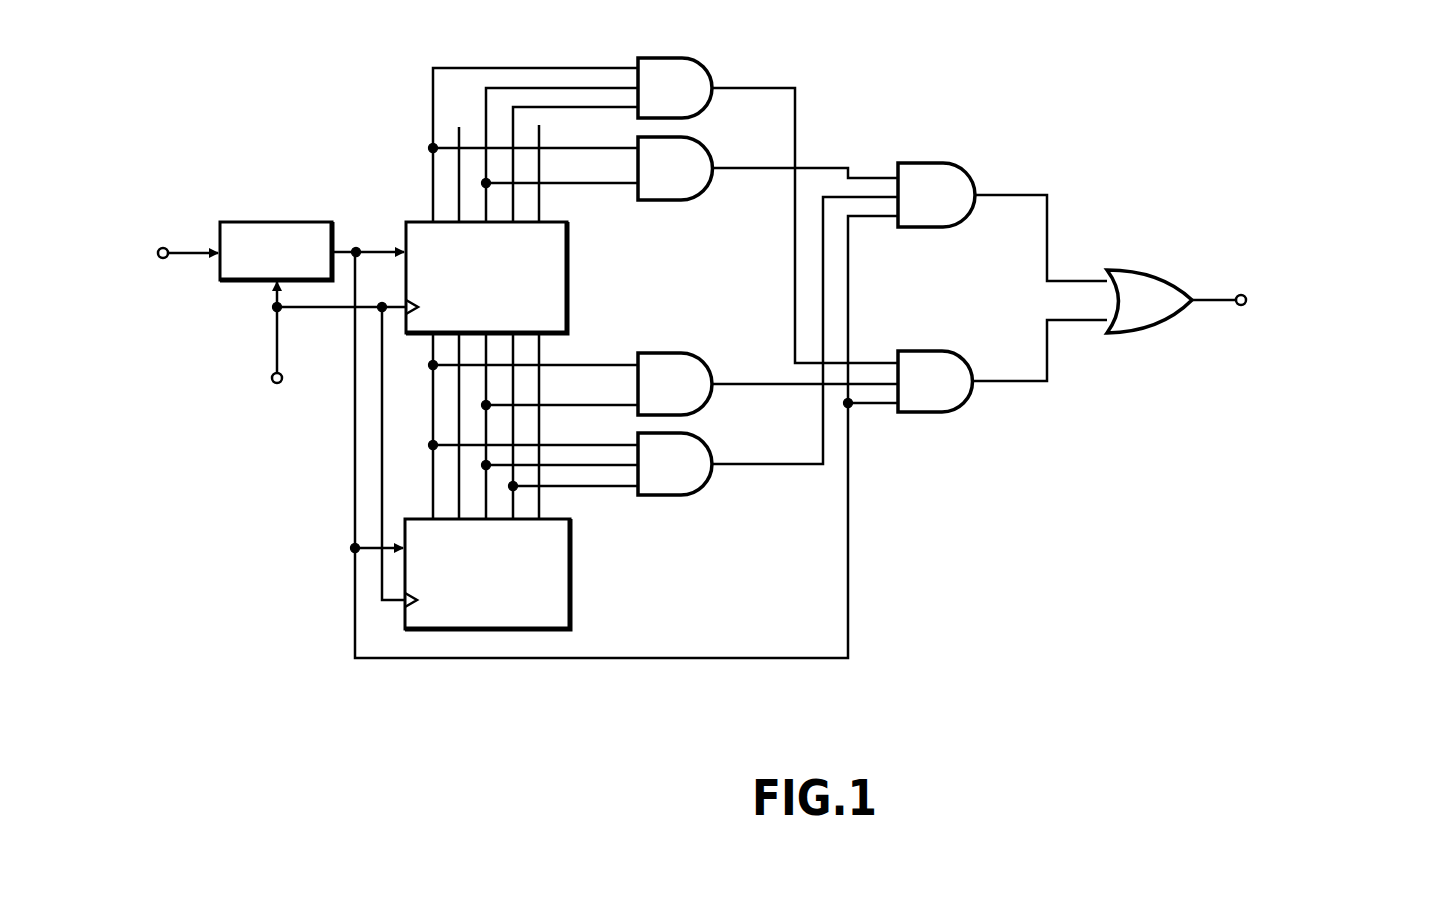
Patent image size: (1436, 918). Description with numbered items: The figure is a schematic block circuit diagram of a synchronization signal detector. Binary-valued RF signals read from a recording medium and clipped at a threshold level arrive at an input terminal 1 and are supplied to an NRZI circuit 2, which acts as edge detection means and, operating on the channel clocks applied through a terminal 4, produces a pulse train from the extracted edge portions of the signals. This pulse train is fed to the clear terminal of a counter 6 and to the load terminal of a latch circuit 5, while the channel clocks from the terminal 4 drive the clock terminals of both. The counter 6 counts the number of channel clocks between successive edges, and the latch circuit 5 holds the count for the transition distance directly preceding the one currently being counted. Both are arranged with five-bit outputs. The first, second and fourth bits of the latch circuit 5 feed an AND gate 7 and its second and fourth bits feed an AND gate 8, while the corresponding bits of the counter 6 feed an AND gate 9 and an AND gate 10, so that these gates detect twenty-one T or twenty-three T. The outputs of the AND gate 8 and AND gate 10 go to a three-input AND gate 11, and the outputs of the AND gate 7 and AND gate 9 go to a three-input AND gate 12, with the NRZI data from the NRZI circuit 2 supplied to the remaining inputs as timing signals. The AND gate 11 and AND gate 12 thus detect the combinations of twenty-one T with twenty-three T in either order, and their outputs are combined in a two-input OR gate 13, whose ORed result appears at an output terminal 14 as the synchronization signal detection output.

The input terminal 1 is at (168, 247).
The NRZI circuit 2 is at (332, 228).
The terminal 4 is at (271, 378).
The latch circuit 5 is at (567, 297).
The counter 6 is at (570, 583).
The AND gate 7 is at (693, 77).
The AND gate 8 is at (702, 178).
The AND gate 9 is at (703, 368).
The AND gate 10 is at (707, 482).
The three-input AND gate 11 is at (957, 177).
The three-input AND gate 12 is at (955, 395).
The OR gate 13 is at (1157, 275).
The output terminal 14 is at (1240, 294).